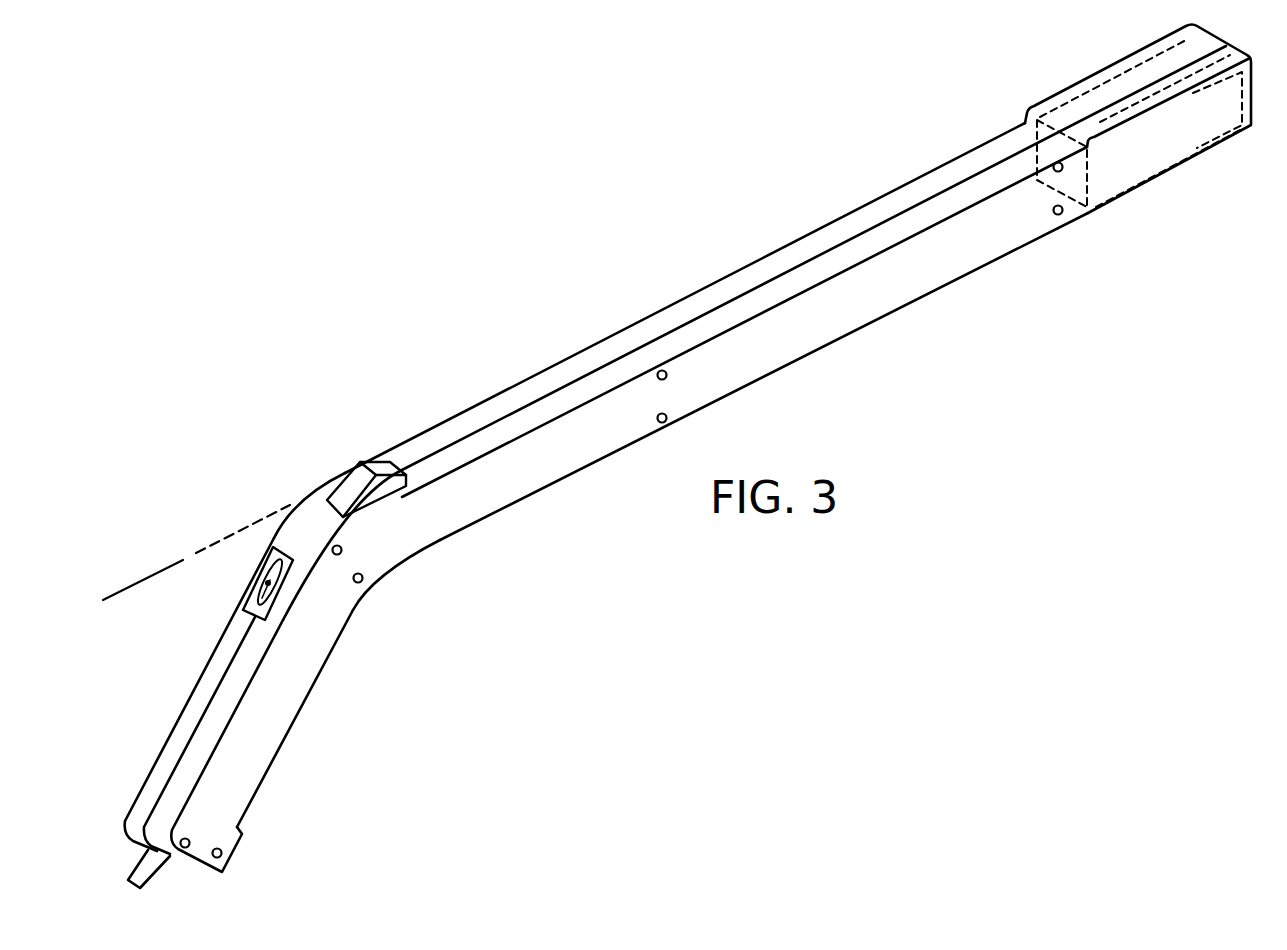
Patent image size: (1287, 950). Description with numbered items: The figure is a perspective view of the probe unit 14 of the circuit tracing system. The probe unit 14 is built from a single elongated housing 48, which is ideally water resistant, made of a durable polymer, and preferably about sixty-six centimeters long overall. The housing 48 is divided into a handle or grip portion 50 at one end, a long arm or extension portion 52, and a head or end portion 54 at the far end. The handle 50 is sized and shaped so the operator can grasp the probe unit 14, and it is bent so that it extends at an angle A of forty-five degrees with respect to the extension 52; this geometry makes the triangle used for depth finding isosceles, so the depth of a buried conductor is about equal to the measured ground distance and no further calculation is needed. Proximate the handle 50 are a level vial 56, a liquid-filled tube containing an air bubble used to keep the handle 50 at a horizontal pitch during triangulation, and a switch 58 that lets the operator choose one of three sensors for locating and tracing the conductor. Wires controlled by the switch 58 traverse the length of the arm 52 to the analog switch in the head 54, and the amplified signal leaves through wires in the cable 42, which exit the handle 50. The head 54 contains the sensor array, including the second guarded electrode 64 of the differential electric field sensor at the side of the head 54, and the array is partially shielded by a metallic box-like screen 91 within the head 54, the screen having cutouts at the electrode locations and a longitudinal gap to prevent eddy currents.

The probe unit 14 is at (666, 457).
The cable 42 is at (148, 868).
The housing 48 is at (467, 553).
The handle or grip portion 50 is at (258, 755).
The arm or extension portion 52 is at (675, 318).
The head or end portion 54 is at (1107, 207).
The level vial 56 is at (276, 592).
The switch 58 is at (348, 487).
The second guarded electrode 64 is at (1193, 93).
The metallic box-like screen 91 is at (1036, 122).
The angle A is at (226, 615).